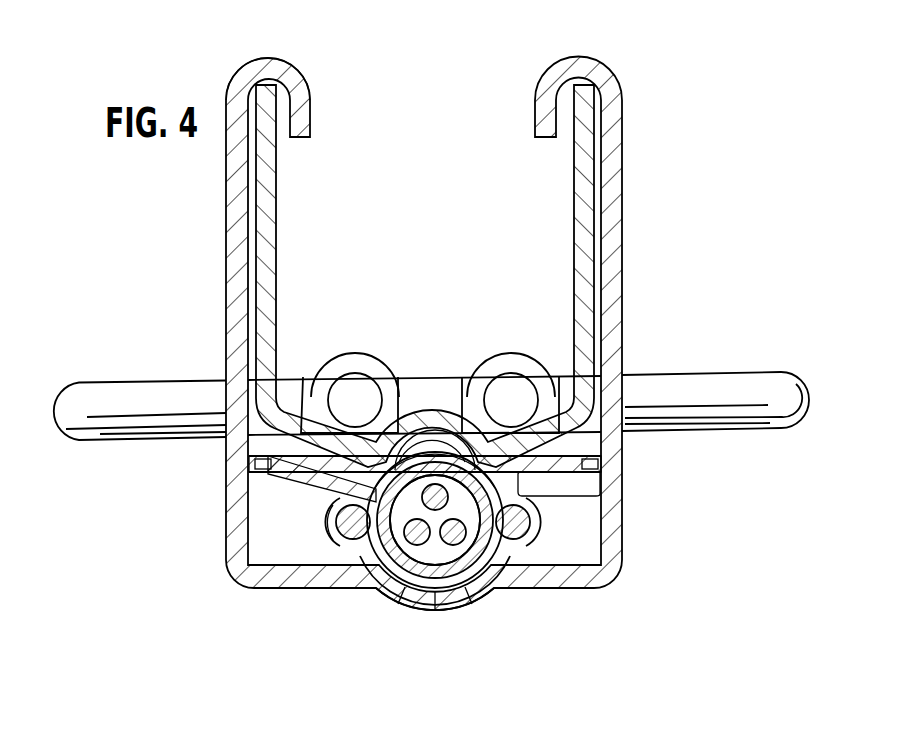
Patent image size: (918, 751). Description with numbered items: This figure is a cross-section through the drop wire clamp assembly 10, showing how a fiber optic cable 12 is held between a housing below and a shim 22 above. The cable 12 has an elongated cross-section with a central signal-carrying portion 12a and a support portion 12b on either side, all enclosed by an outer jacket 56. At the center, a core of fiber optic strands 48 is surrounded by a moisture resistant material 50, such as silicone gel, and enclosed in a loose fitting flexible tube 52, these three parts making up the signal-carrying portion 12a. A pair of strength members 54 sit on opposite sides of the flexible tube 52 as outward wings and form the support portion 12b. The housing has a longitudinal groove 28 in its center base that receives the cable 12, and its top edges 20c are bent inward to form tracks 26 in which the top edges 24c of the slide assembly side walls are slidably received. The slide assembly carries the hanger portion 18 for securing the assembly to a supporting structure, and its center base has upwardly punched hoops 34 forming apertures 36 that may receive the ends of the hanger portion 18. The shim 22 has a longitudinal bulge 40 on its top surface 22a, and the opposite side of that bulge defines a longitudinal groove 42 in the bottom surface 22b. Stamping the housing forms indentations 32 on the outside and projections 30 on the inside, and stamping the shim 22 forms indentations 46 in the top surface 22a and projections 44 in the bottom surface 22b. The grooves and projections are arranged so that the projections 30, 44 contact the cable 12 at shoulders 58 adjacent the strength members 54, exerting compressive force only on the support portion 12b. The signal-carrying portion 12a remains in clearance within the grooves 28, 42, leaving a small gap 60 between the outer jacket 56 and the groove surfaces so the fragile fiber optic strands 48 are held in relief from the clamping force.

The drop wire clamp assembly 10 is at (666, 150).
The fiber optic cable 12 is at (452, 558).
The signal-carrying portion 12a is at (487, 553).
The support portion 12b is at (540, 510).
The hanger portion 18 is at (698, 387).
The top edges 20c is at (272, 62).
The shim 22 is at (620, 465).
The top surface 22a is at (262, 460).
The bottom surface 22b is at (258, 472).
The top edges 24c is at (282, 82).
The tracks 26 is at (265, 66).
The longitudinal groove 28 is at (444, 562).
The projections 30 is at (382, 568).
The indentations 32 is at (356, 590).
The hoops 34 is at (322, 372).
The apertures 36 is at (330, 428).
The longitudinal bulge 40 is at (410, 420).
The longitudinal groove 42 is at (442, 445).
The projections 44 is at (345, 489).
The indentations 46 is at (358, 455).
The fiber optic strands 48 is at (466, 563).
The moisture resistant material 50 is at (411, 580).
The flexible tube 52 is at (420, 592).
The strength members 54 is at (330, 590).
The outer jacket 56 is at (338, 530).
The shoulders 58 is at (350, 521).
The gap 60 is at (436, 440).